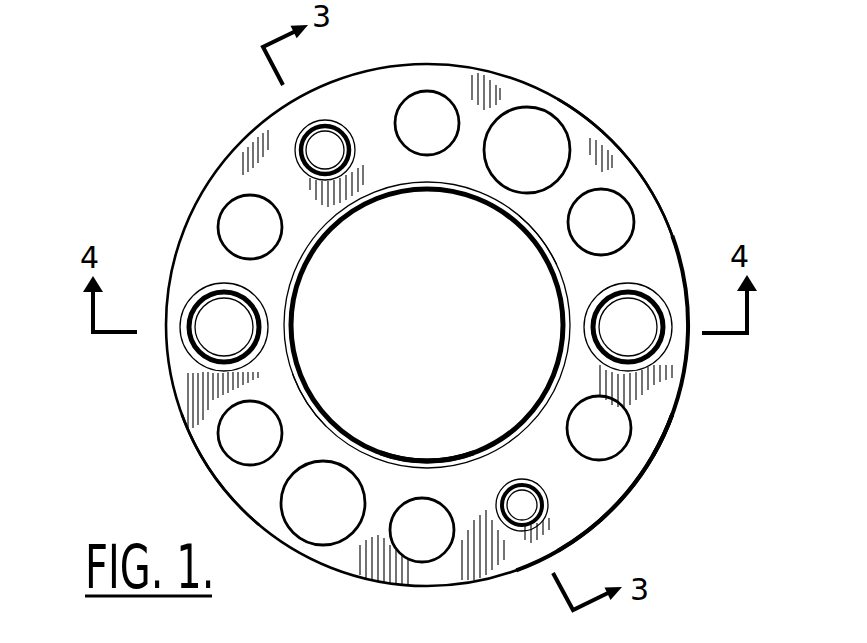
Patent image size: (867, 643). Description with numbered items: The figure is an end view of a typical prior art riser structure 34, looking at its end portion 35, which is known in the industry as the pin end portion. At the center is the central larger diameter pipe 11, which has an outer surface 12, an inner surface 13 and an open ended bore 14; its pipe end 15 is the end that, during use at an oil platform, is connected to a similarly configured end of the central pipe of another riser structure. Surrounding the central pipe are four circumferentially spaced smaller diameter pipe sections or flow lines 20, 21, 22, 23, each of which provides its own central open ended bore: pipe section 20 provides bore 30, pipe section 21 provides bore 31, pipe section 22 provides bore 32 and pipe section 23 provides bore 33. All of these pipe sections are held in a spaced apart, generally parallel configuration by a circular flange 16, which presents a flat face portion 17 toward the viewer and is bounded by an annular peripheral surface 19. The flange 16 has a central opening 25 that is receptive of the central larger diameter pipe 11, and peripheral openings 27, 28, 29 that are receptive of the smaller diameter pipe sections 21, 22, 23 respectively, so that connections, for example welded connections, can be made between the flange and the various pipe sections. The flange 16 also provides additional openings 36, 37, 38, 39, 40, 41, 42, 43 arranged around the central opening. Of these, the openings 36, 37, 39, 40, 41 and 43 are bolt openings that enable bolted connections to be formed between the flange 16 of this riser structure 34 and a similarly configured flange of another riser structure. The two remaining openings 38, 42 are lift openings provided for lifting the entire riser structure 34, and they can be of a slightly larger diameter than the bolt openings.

The central larger diameter pipe 11 is at (490, 212).
The outer surface 12 is at (558, 390).
The inner surface 13 is at (448, 445).
The open ended bore 14 is at (327, 313).
The pipe end 15 is at (545, 246).
The circular flange 16 is at (637, 483).
The flat face portion 17 is at (645, 213).
The annular peripheral surface 19 is at (182, 453).
The smaller diameter pipe section 20 is at (200, 365).
The smaller diameter pipe section 21 is at (337, 122).
The smaller diameter pipe section 22 is at (660, 303).
The smaller diameter pipe section 23 is at (547, 502).
The central opening 25 is at (283, 374).
The peripheral opening 27 is at (315, 112).
The peripheral opening 28 is at (620, 275).
The peripheral opening 29 is at (505, 472).
The bore 30 is at (207, 328).
The bore 31 is at (313, 155).
The bore 32 is at (647, 333).
The bore 33 is at (513, 527).
The riser structure 34 is at (657, 456).
The end portion 35 is at (628, 122).
The bolt opening 36 is at (247, 235).
The bolt opening 37 is at (427, 110).
The lift opening 38 is at (533, 128).
The bolt opening 39 is at (610, 205).
The bolt opening 40 is at (607, 427).
The bolt opening 41 is at (422, 542).
The lift opening 42 is at (328, 520).
The bolt opening 43 is at (245, 445).